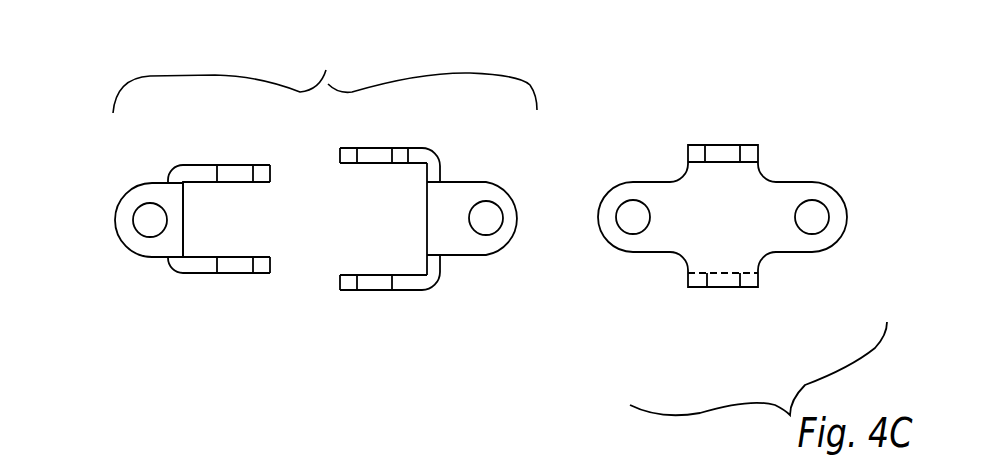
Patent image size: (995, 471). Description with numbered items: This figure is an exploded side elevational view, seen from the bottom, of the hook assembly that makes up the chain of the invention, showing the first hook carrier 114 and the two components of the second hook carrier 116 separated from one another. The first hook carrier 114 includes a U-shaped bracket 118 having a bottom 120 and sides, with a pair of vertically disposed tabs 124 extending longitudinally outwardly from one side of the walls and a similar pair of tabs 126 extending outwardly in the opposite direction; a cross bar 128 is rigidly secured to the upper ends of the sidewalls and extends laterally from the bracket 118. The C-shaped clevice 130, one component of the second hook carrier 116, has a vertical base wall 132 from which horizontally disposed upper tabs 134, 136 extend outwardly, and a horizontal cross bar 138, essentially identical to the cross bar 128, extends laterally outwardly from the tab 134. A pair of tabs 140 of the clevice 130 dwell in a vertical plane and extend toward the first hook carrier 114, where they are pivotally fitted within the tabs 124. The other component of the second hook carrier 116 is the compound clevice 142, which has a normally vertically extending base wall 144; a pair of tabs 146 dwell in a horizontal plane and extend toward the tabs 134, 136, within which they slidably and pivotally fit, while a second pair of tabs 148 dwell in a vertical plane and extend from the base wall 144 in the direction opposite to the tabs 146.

The first hook carrier 114 is at (656, 130).
The second hook carrier 116 is at (326, 70).
The U-shaped bracket 118 is at (703, 317).
The bottom 120 is at (750, 288).
The tabs 124 is at (635, 183).
The tabs 126 is at (808, 185).
The cross bar 128 is at (718, 145).
The C-shaped clevice 130 is at (399, 122).
The vertical base wall 132 is at (433, 208).
The upper tab 134 is at (437, 152).
The upper tab 136 is at (367, 280).
The cross bar 138 is at (362, 155).
The tabs 140 is at (497, 190).
The compound clevice 142 is at (164, 158).
The base wall 144 is at (181, 216).
The tabs 146 is at (262, 172).
The tabs 148 is at (137, 188).